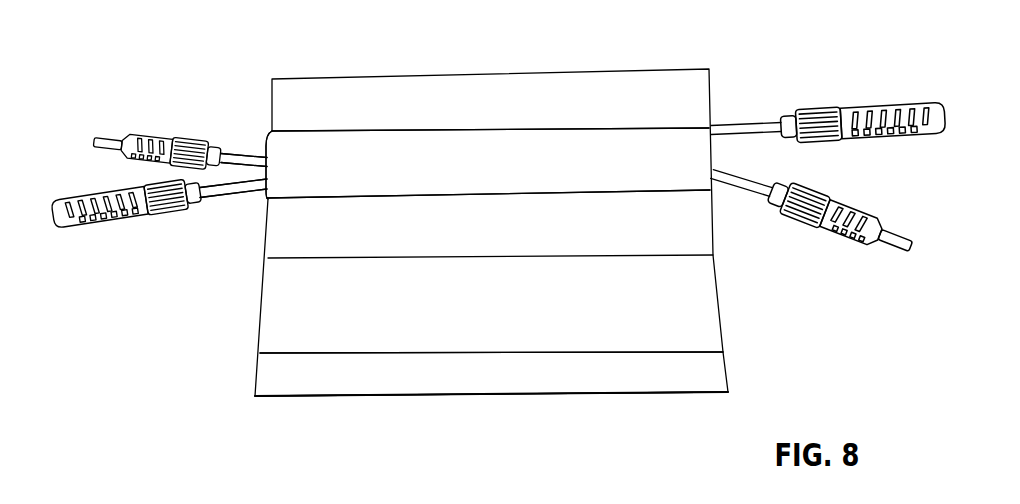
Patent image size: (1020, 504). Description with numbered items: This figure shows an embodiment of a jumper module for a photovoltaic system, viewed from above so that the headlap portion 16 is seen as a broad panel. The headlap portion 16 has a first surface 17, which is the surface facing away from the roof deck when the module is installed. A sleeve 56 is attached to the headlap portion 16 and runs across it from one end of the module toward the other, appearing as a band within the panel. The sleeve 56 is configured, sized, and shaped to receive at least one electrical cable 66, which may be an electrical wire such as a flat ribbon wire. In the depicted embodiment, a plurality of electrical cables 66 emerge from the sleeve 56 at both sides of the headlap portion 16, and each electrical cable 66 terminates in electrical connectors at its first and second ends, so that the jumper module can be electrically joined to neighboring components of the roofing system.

The headlap portion 16 is at (437, 250).
The sleeve 56 is at (388, 142).
The first surface 17 is at (330, 337).
The electrical cable 66 is at (246, 143).